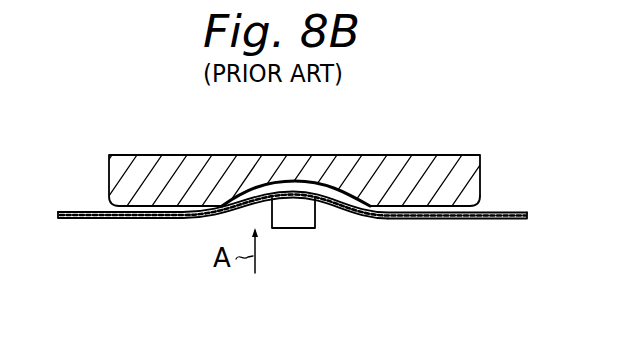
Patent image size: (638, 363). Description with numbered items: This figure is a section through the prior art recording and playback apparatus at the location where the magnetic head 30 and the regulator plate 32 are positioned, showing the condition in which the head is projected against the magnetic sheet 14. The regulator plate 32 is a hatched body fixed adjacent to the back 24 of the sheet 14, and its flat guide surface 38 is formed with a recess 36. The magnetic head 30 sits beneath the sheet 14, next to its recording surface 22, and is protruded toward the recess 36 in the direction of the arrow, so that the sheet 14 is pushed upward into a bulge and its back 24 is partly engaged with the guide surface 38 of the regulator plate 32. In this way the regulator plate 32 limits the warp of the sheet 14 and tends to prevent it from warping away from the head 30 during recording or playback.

The magnetic sheet 14 is at (112, 219).
The recording surface 22 is at (350, 215).
The back 24 is at (75, 211).
The magnetic head 30 is at (301, 229).
The regulator plate 32 is at (200, 155).
The recess 36 is at (333, 180).
The guide surface 38 is at (481, 203).